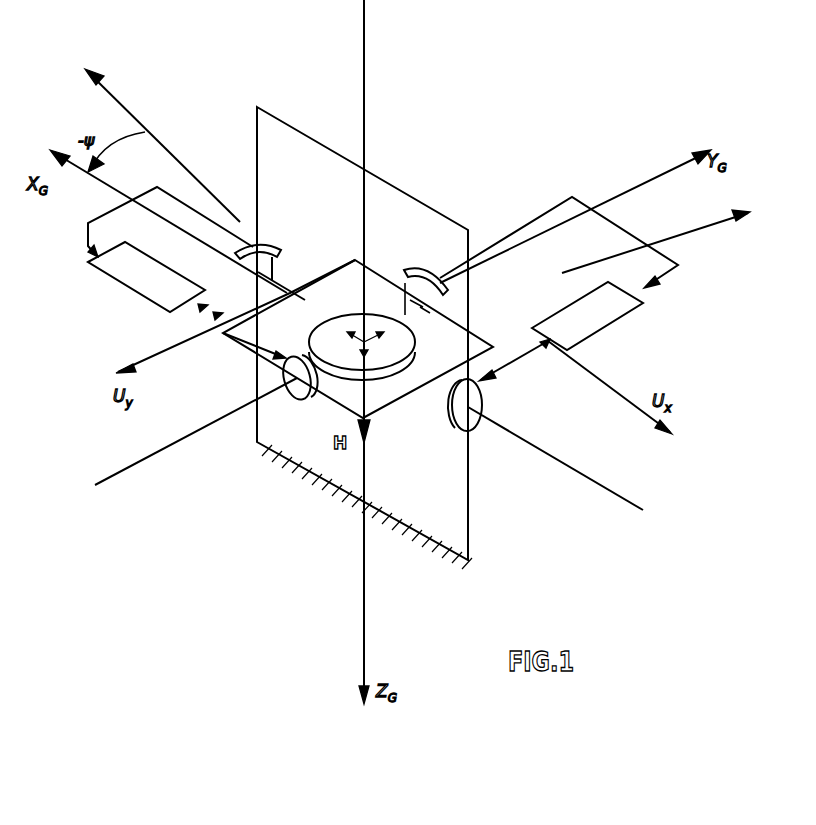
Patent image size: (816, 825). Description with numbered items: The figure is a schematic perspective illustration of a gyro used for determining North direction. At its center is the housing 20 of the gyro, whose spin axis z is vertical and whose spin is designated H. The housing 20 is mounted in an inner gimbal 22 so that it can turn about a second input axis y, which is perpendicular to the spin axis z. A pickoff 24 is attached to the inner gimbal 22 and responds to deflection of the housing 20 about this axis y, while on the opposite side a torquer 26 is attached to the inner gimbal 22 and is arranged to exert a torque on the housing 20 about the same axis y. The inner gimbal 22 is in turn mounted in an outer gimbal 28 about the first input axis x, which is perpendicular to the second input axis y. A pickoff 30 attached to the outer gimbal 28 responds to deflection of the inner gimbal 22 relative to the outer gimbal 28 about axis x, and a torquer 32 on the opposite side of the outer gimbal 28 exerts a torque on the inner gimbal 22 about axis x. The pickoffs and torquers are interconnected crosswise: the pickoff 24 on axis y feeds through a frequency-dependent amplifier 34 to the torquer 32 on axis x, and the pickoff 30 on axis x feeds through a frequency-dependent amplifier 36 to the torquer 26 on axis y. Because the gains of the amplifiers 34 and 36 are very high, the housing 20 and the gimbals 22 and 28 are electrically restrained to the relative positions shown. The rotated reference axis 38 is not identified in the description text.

The housing 20 is at (407, 343).
The inner gimbal 22 is at (405, 403).
The pickoff 24 is at (428, 270).
The torquer 26 is at (283, 377).
The outer gimbal 28 is at (293, 127).
The pickoff 30 is at (251, 240).
The torquer 32 is at (462, 430).
The frequency-dependent amplifier 34 is at (577, 340).
The frequency-dependent amplifier 36 is at (158, 305).
The rotated reference axis 38 is at (165, 147).